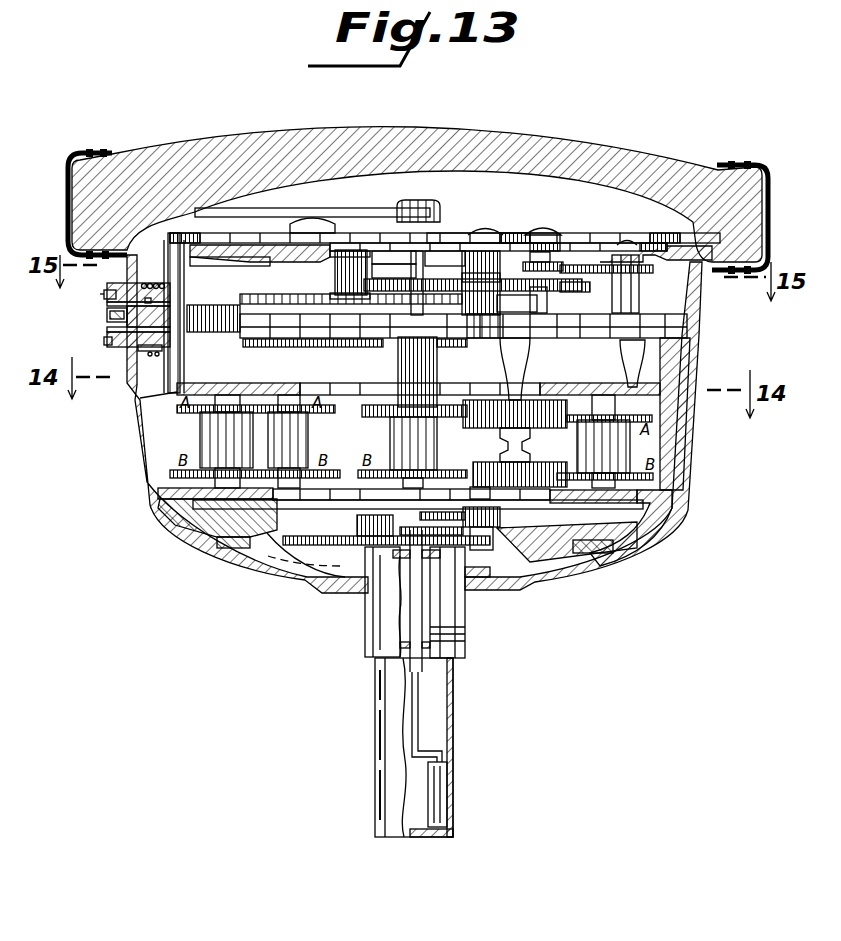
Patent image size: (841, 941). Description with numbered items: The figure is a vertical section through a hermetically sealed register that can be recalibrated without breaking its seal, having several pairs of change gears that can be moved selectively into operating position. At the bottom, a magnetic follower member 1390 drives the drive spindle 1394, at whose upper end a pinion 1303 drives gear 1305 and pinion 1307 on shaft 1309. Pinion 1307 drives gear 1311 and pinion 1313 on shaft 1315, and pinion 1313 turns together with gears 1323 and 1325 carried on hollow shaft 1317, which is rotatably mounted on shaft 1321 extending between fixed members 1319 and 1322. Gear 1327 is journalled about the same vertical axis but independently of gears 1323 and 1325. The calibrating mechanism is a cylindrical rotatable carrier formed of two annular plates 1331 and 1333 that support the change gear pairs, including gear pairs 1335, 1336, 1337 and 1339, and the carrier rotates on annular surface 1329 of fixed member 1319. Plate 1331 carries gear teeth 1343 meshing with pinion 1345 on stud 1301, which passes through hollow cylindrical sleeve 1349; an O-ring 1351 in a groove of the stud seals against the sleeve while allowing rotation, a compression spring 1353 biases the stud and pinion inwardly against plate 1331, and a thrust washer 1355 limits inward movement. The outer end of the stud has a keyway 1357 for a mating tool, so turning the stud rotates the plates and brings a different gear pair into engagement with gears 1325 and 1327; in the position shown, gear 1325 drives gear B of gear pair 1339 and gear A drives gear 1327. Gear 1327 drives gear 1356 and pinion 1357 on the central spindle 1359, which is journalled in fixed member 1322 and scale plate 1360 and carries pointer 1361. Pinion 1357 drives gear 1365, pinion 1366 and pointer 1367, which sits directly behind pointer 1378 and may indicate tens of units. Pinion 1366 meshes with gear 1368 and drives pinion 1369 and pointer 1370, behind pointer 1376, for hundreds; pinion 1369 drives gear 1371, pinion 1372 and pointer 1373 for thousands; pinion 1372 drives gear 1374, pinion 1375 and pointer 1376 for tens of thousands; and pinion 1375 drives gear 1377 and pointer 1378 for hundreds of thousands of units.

The stud 1301 is at (108, 323).
The pinion 1303 is at (463, 588).
The gear 1305 is at (352, 536).
The pinion 1307 is at (360, 521).
The shaft 1309 is at (364, 549).
The gear 1311 is at (412, 528).
The pinion 1313 is at (430, 494).
The shaft 1315 is at (493, 540).
The hollow shaft 1317 is at (500, 494).
The fixed member 1319 is at (550, 523).
The shaft 1321 is at (524, 350).
The fixed member 1322 is at (571, 327).
The gear 1323 is at (627, 553).
The gear 1325 is at (500, 456).
The gear 1327 is at (492, 426).
The annular surface 1329 is at (160, 507).
The annular plate 1331 is at (192, 384).
The annular plate 1333 is at (684, 487).
The gear pair 1335 is at (210, 430).
The gear pair 1336 is at (300, 438).
The gear pair 1337 is at (396, 449).
The gear pair 1339 is at (590, 446).
The gear teeth 1343 is at (160, 394).
The pinion 1345 is at (180, 366).
The hollow cylindrical sleeve 1349 is at (106, 341).
The O-ring 1351 is at (130, 348).
The compression spring 1353 is at (150, 283).
The thrust washer 1355 is at (104, 294).
The gear 1356 is at (370, 417).
The pinion 1357 is at (107, 305).
The spindle 1359 is at (395, 255).
The scale plate 1360 is at (303, 245).
The pointer 1361 is at (319, 208).
The gear 1365 is at (278, 347).
The pinion 1366 is at (334, 272).
The pointer 1367 is at (318, 222).
The gear 1368 is at (408, 290).
The pinion 1369 is at (449, 257).
The pointer 1370 is at (446, 222).
The gear 1371 is at (608, 266).
The pinion 1372 is at (553, 246).
The pointer 1373 is at (522, 233).
The gear 1374 is at (522, 300).
The pinion 1375 is at (483, 330).
The pointer 1376 is at (455, 234).
The gear 1377 is at (262, 300).
The pointer 1378 is at (318, 232).
The magnetic follower member 1390 is at (444, 785).
The drive spindle 1394 is at (415, 718).